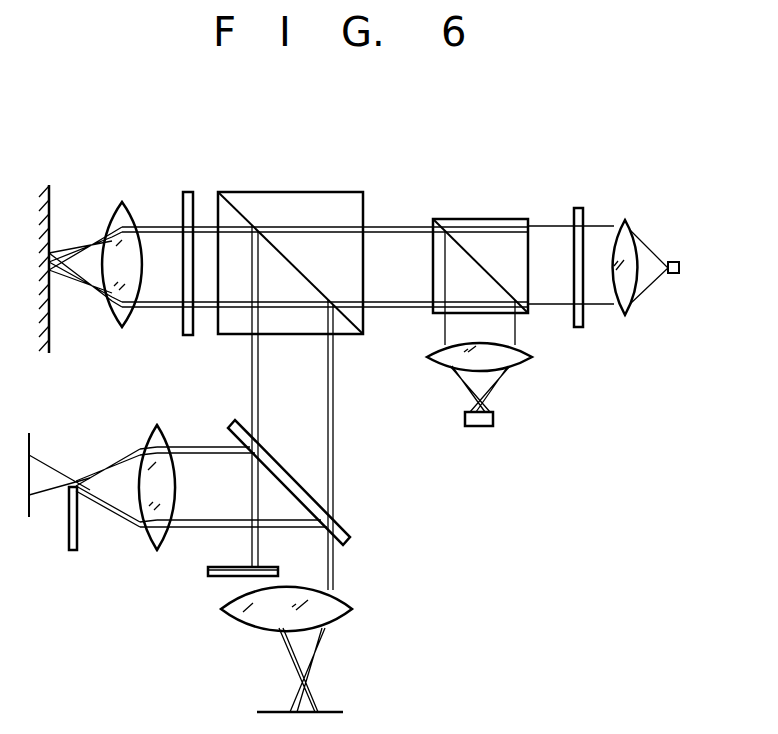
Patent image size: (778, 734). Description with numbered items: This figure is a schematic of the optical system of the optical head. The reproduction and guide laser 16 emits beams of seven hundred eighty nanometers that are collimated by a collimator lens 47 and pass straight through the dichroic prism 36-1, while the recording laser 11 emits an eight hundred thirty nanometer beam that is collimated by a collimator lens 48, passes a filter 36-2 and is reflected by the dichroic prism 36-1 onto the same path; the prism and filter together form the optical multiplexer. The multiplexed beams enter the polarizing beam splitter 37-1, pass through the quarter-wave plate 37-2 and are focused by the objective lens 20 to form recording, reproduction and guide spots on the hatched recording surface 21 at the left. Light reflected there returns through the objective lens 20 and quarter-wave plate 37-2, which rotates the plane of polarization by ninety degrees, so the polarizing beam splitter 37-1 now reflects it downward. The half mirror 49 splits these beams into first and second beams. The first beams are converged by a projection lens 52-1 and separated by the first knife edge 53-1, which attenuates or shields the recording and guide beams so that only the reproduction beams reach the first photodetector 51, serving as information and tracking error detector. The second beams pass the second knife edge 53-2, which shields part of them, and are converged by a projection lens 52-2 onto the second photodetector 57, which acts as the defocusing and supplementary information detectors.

The reflecting wall / reference surface 21 is at (50, 194).
The objective lens 20 is at (125, 203).
The λ/4 plate 37-2 is at (189, 192).
The polarizing beam splitter 37-1 is at (310, 192).
The dichroic prism 36-1 is at (490, 219).
The filter 36-2 is at (579, 208).
The collimator lens 48 is at (629, 226).
The recording laser 11 is at (674, 273).
The collimator lens 47 is at (530, 362).
The reproduction and guide laser 16 is at (480, 426).
The first photodetector 51 is at (32, 446).
The projection lens 52-1 is at (152, 426).
The first knife edge 53-1 is at (73, 550).
The second knife edge 53-2 is at (208, 576).
The half mirror 49 is at (347, 528).
The projection lens 52-2 is at (346, 603).
The second photodetector 57 is at (340, 711).